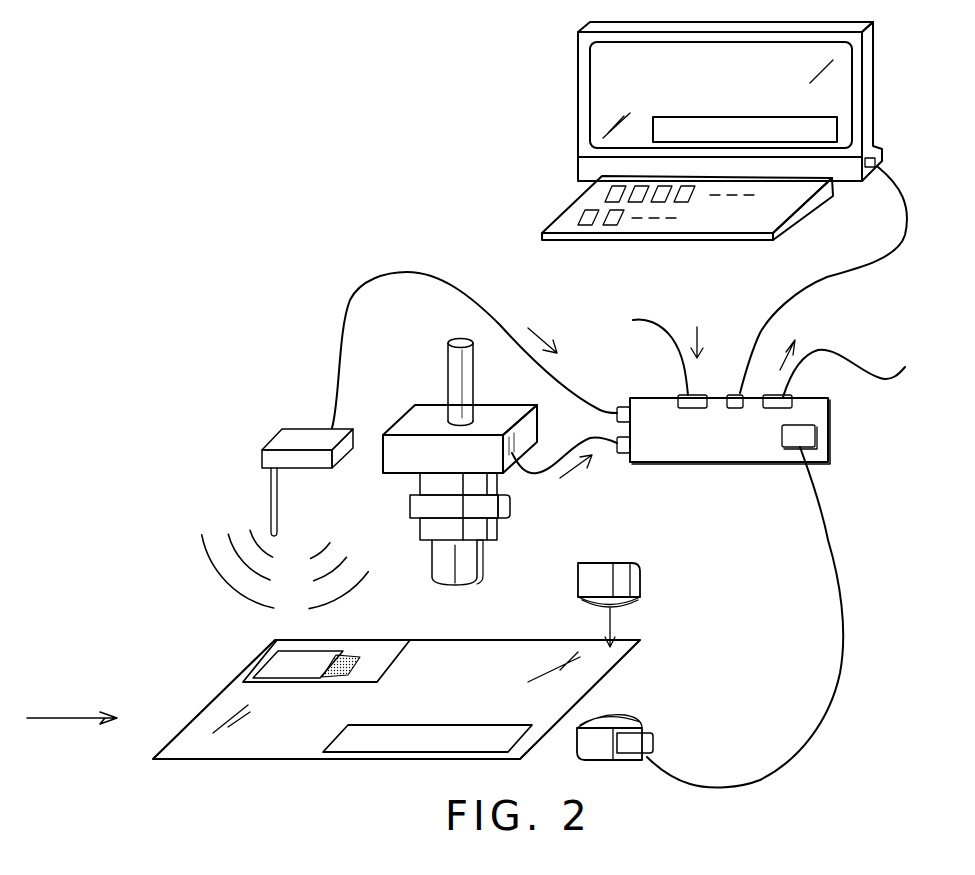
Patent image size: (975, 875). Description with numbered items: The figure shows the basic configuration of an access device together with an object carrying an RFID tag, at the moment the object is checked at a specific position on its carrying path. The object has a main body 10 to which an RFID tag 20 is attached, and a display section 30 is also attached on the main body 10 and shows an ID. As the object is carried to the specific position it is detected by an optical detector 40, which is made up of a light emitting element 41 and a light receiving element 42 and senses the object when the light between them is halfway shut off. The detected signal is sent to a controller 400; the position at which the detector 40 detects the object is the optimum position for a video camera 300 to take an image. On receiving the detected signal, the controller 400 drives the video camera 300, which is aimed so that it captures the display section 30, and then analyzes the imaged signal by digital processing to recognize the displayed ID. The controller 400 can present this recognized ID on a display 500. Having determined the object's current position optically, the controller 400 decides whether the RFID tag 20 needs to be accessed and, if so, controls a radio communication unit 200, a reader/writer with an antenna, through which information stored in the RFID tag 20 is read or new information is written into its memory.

The main body 10 is at (208, 700).
The RFID tag 20 is at (400, 668).
The display section 30 is at (335, 735).
The optical detector 40 is at (729, 557).
The light emitting element 41 is at (625, 580).
The light receiving element 42 is at (640, 742).
The radio communication unit 200 is at (287, 438).
The video camera 300 is at (496, 507).
The controller 400 is at (830, 428).
The display 500 is at (590, 93).